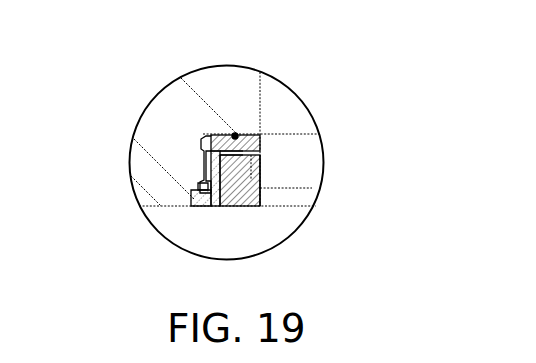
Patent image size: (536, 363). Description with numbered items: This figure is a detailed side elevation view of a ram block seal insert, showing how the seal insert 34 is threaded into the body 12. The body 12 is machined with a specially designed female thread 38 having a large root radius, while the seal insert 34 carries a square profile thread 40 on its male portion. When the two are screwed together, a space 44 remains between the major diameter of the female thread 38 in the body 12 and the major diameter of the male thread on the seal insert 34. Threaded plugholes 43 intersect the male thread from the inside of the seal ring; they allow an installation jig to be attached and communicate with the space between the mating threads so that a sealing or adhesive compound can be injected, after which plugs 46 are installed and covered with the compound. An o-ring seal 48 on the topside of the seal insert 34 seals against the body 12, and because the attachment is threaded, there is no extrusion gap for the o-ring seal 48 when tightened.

The body 12 is at (217, 82).
The seal insert 34 is at (233, 180).
The female thread 38 is at (205, 180).
The square profile thread 40 is at (197, 190).
The threaded plugholes 43 is at (255, 177).
The space 44 is at (210, 187).
The plugs 46 is at (227, 165).
The o-ring seal 48 is at (235, 135).